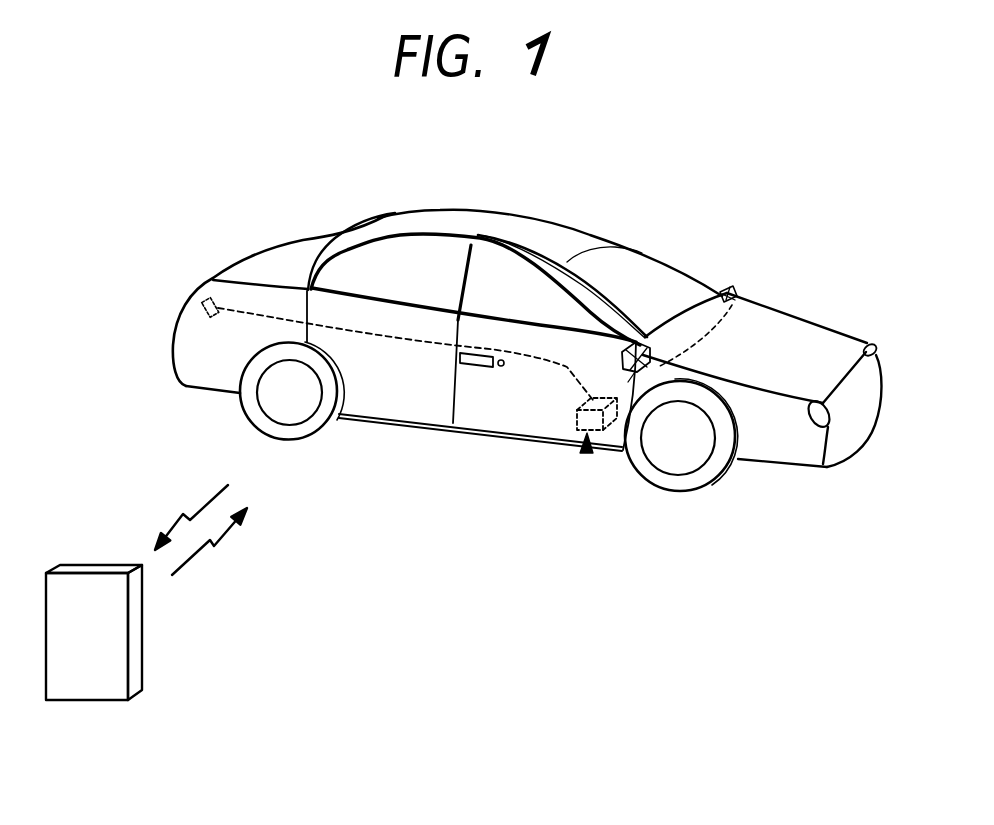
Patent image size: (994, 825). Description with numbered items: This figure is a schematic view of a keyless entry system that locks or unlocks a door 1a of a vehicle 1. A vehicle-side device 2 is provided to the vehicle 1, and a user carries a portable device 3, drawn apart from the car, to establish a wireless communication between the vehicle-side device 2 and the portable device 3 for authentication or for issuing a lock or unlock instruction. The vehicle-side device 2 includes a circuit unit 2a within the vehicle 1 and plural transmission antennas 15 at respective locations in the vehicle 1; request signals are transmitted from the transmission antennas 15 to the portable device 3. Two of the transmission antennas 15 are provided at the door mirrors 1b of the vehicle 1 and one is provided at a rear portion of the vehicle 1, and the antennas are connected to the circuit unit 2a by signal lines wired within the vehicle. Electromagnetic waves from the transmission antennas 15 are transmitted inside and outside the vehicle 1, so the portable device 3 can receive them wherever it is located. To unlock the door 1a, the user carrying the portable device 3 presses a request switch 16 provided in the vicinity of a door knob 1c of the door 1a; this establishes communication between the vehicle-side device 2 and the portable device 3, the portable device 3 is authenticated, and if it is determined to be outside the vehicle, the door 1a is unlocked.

The vehicle 1 is at (533, 213).
The door 1a is at (470, 398).
The door mirror 1b is at (726, 292).
The door knob 1c is at (447, 359).
The vehicle-side device 2 is at (587, 455).
The circuit unit 2a is at (609, 445).
The portable device 3 is at (90, 573).
The transmission antenna 15 is at (198, 300).
The request switch 16 is at (501, 366).